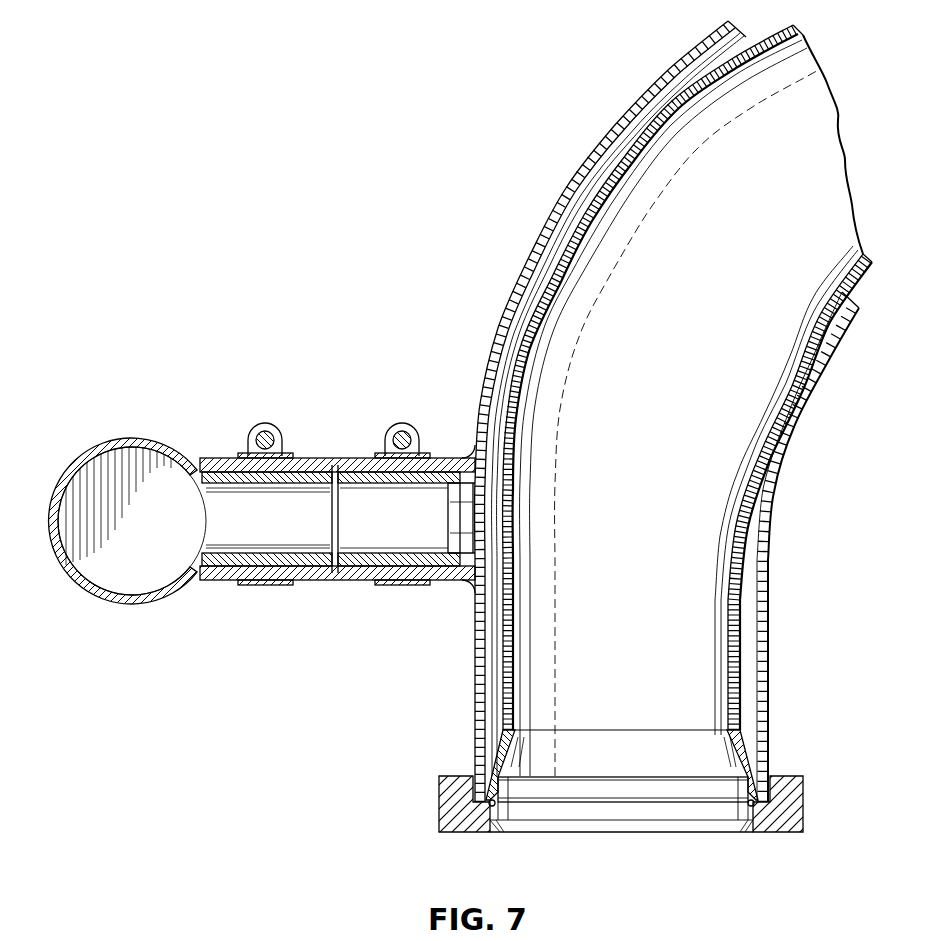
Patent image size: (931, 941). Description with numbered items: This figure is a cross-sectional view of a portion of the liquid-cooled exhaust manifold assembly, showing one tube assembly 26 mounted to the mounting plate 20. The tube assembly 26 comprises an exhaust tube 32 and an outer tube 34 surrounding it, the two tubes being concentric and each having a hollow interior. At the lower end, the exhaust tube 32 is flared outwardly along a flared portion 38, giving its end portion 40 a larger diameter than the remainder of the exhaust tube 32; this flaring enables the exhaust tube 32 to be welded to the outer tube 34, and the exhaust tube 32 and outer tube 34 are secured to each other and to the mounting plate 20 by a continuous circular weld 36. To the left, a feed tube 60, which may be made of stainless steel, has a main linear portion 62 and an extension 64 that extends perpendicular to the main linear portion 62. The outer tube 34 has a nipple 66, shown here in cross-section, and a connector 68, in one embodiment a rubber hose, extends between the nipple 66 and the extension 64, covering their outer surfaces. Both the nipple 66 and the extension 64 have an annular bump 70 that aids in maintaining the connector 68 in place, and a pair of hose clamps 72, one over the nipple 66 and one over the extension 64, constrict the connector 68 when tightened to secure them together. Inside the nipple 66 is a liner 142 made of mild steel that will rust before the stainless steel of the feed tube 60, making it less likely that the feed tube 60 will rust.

The mounting plate 20 is at (804, 791).
The tube assembly 26 is at (608, 86).
The exhaust tube 32 is at (517, 442).
The outer tube 34 is at (498, 330).
The continuous circular weld 36 is at (493, 807).
The flared portion 38 is at (508, 750).
The end portion 40 is at (500, 789).
The feed tube 60 is at (73, 457).
The main linear portion 62 is at (153, 443).
The extension 64 is at (247, 490).
The nipple 66 is at (440, 478).
The connector 68 is at (353, 457).
The annular bump 70 is at (334, 470).
The hose clamp 72 is at (266, 424).
The liner 142 is at (450, 523).